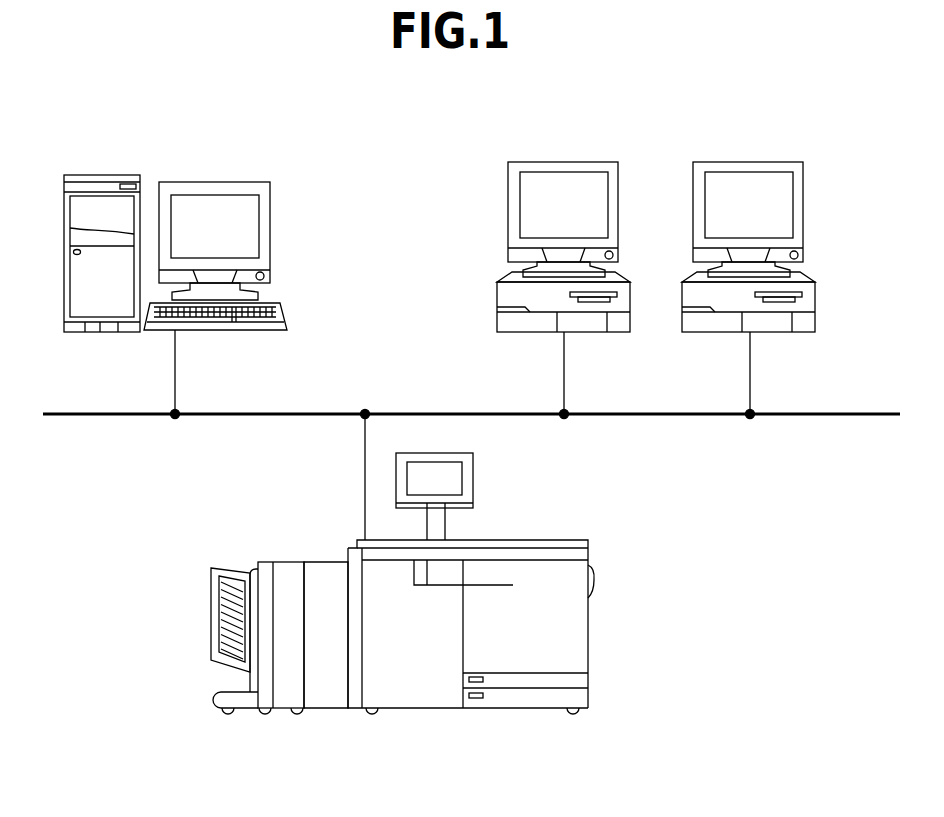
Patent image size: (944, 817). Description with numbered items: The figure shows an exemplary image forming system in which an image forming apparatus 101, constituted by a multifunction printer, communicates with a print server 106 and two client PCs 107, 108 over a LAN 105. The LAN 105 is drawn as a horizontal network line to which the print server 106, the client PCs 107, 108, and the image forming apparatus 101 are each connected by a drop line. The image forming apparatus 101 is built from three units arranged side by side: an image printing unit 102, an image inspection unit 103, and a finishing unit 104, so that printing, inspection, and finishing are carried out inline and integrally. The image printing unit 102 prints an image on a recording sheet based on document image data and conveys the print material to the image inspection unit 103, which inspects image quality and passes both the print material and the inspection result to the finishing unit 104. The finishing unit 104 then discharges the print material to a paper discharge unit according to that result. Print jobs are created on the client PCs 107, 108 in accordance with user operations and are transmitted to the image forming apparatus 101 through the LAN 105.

The image forming apparatus 101 is at (596, 582).
The image printing unit 102 is at (423, 703).
The image inspection unit 103 is at (330, 700).
The finishing unit 104 is at (283, 705).
The LAN 105 is at (423, 412).
The print server 106 is at (216, 182).
The client PC 107 is at (558, 162).
The client PC 108 is at (744, 162).